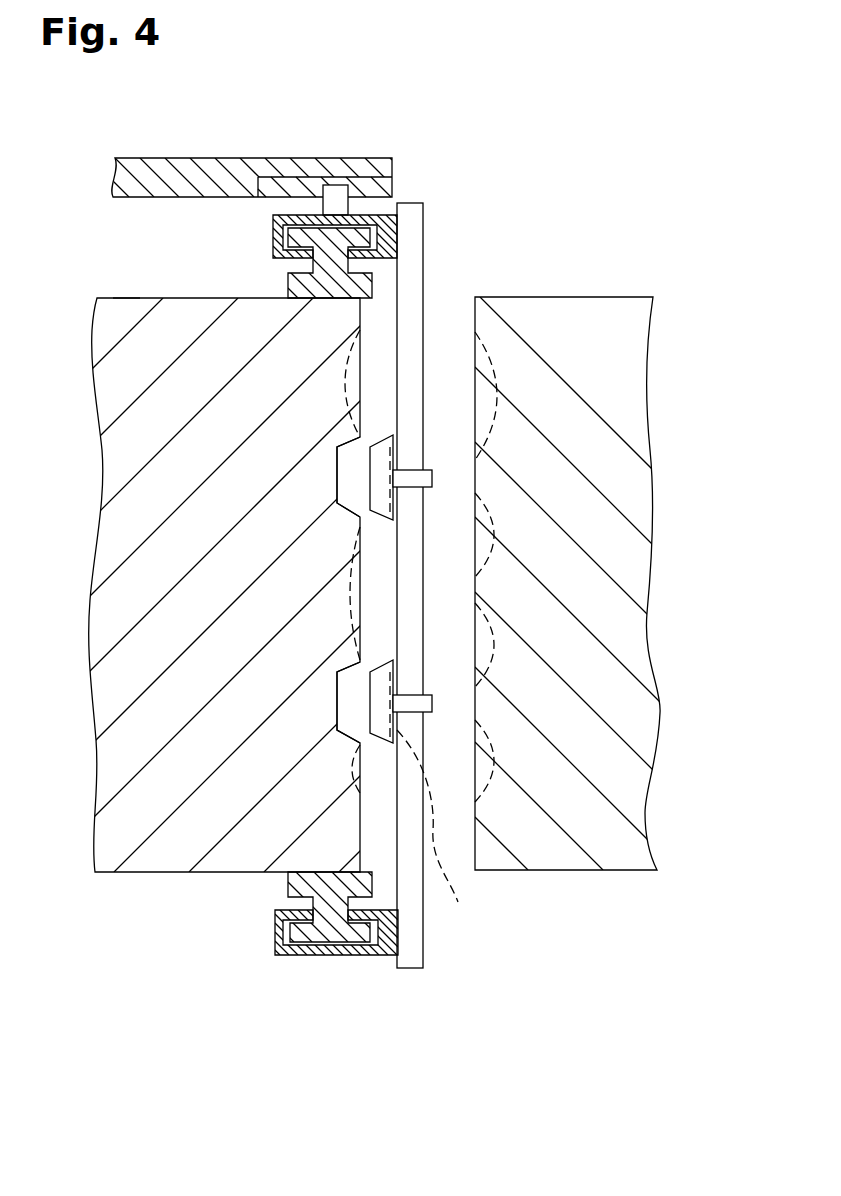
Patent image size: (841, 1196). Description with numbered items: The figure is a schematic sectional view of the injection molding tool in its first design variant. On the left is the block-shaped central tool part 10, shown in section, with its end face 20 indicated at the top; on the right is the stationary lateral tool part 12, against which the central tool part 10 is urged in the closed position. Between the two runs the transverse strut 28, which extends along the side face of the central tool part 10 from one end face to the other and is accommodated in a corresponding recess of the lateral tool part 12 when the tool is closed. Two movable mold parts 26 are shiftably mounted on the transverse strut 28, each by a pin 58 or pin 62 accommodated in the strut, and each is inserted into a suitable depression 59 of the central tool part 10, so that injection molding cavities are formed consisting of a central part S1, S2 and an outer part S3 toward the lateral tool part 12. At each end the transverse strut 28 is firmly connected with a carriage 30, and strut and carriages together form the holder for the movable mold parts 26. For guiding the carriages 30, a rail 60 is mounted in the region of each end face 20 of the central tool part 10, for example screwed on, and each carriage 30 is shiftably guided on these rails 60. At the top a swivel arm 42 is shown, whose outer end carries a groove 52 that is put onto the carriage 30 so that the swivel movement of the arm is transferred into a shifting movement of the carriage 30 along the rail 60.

The central tool part 10 is at (135, 378).
The lateral tool part 12 is at (620, 358).
The end face 20 is at (124, 297).
The movable mold part 26 is at (380, 447).
The transverse strut 28 is at (412, 240).
The carriage 30 is at (400, 219).
The swivel arm 42 is at (197, 178).
The groove 52 is at (371, 185).
The pin 58 is at (408, 481).
The depression 59 is at (352, 482).
The rail 60 is at (287, 288).
The radial ball bearing 62 is at (408, 706).
The central part of injection molding cavity S1 is at (352, 640).
The central part of injection molding cavity S2 is at (443, 836).
The outer part of injection molding cavity S3 is at (497, 645).